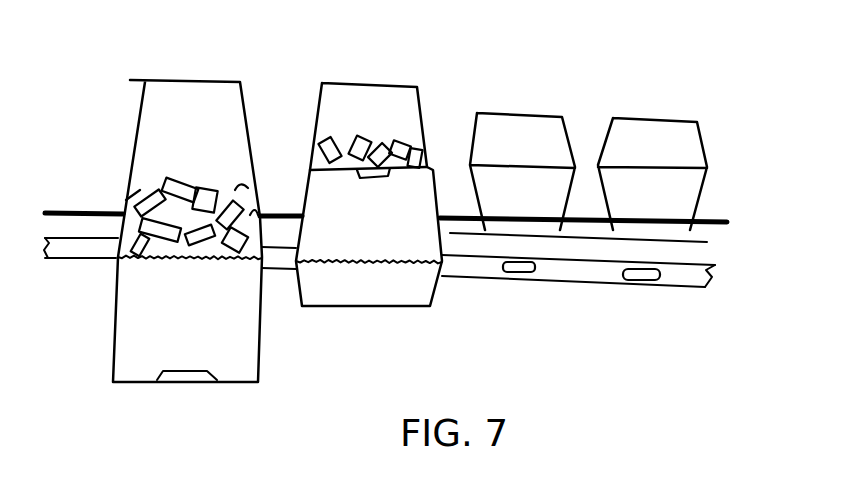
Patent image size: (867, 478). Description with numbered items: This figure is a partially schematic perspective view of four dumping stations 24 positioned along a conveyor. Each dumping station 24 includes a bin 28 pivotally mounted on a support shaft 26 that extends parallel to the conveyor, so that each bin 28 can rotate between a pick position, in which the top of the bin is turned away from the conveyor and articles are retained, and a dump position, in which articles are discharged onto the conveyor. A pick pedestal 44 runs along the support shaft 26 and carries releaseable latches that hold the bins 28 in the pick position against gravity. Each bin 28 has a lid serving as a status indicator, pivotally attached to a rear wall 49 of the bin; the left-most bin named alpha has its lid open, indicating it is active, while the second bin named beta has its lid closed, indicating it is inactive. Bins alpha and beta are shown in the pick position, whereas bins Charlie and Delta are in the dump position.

The dumping station 24 is at (107, 173).
The support shaft 26 is at (713, 220).
The bin 28 is at (193, 97).
The pick pedestal 44 is at (707, 277).
The rear wall 49 is at (407, 293).